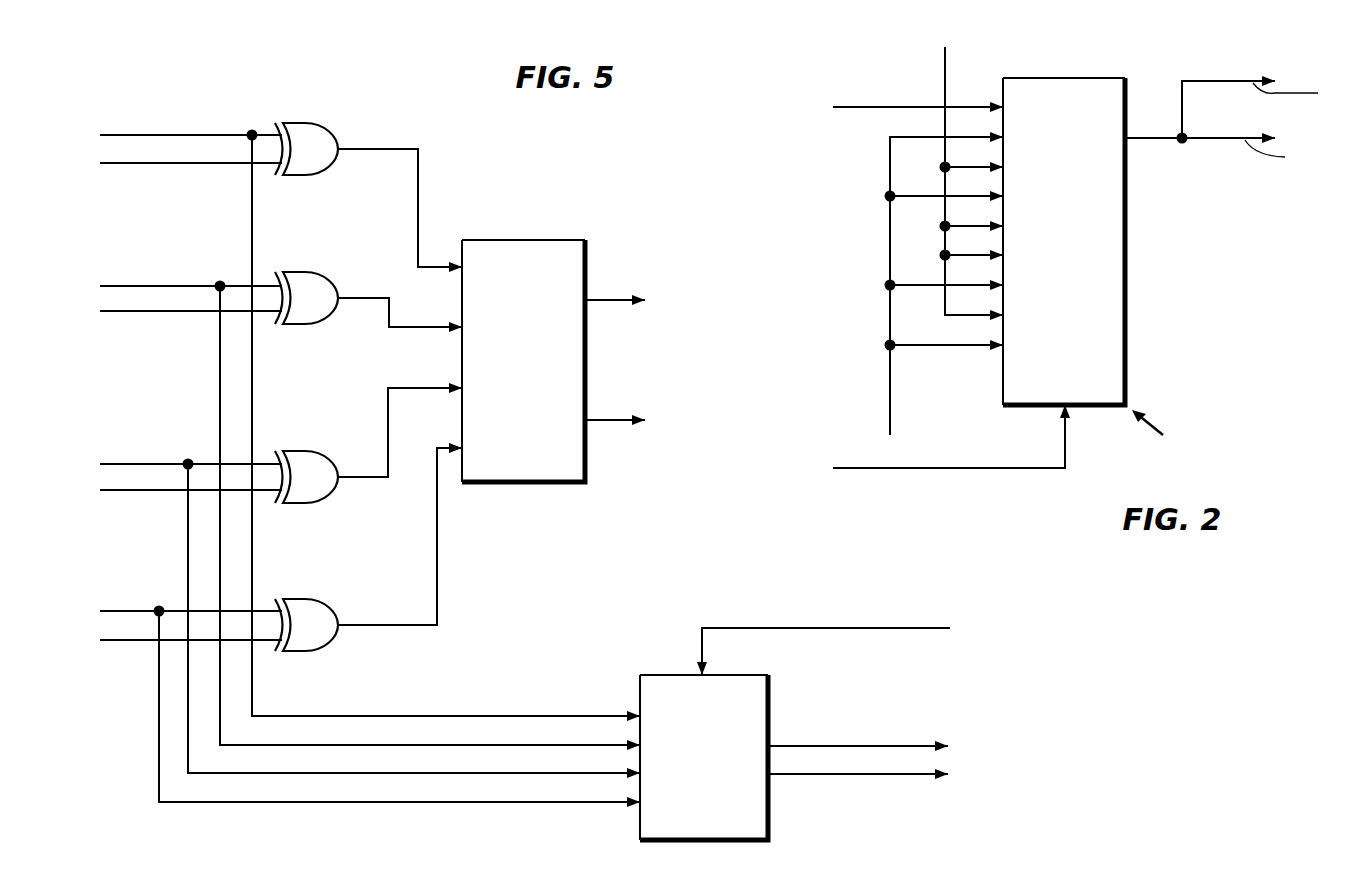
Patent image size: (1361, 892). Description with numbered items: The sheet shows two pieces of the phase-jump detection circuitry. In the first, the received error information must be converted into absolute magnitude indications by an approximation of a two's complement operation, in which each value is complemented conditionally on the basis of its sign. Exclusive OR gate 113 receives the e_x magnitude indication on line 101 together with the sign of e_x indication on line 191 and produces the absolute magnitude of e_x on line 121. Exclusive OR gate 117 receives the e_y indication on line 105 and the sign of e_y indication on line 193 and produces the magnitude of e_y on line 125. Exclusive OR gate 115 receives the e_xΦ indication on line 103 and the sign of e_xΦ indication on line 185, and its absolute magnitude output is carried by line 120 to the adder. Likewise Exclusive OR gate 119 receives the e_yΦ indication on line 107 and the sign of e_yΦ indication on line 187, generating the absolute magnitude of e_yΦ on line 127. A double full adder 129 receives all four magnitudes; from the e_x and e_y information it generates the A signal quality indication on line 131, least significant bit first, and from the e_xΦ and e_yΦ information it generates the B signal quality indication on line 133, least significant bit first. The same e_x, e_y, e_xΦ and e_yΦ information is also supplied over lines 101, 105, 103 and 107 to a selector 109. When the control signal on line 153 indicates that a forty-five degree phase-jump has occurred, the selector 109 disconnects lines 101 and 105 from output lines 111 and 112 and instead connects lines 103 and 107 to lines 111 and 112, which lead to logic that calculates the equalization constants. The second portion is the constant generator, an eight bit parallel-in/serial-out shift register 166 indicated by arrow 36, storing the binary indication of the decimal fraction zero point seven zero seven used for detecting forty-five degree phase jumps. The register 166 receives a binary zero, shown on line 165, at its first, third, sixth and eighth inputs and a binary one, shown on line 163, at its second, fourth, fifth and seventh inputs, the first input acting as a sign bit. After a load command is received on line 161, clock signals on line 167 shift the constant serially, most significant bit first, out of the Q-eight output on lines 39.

In FIG. 5, the line 101 is at (145, 134).
In FIG. 5, the line 191 is at (113, 165).
In FIG. 5, the line 105 is at (148, 285).
In FIG. 5, the line 193 is at (112, 313).
In FIG. 5, the line 103 is at (140, 463).
In FIG. 5, the line 185 is at (120, 492).
In FIG. 5, the line 107 is at (136, 610).
In FIG. 2, the line 107 is at (1208, 98).
In FIG. 5, the line 187 is at (112, 642).
In FIG. 5, the Exclusive OR gate 113 is at (330, 123).
In FIG. 5, the Exclusive OR gate 117 is at (318, 272).
In FIG. 5, the Exclusive OR gate 115 is at (318, 451).
In FIG. 5, the Exclusive OR gate 119 is at (322, 600).
In FIG. 5, the line 121 is at (418, 195).
In FIG. 5, the line 125 is at (424, 327).
In FIG. 5, the gate output line 120 is at (410, 390).
In FIG. 5, the line 127 is at (437, 540).
In FIG. 5, the double full adder 129 is at (562, 240).
In FIG. 5, the line 131 is at (617, 299).
In FIG. 5, the line 133 is at (628, 422).
In FIG. 5, the selector 109 is at (770, 690).
In FIG. 5, the line 153 is at (898, 627).
In FIG. 5, the line 111 is at (884, 745).
In FIG. 5, the line 112 is at (905, 778).
In FIG. 2, the line 161 is at (848, 106).
In FIG. 2, the logic one input line 163 is at (945, 64).
In FIG. 2, the logic zero input line 165 is at (890, 397).
In FIG. 2, the register 166 is at (1128, 256).
In FIG. 2, the line 167 is at (893, 470).
In FIG. 2, the register circuit 36 is at (1165, 429).
In FIG. 2, the lines 39 is at (1293, 129).